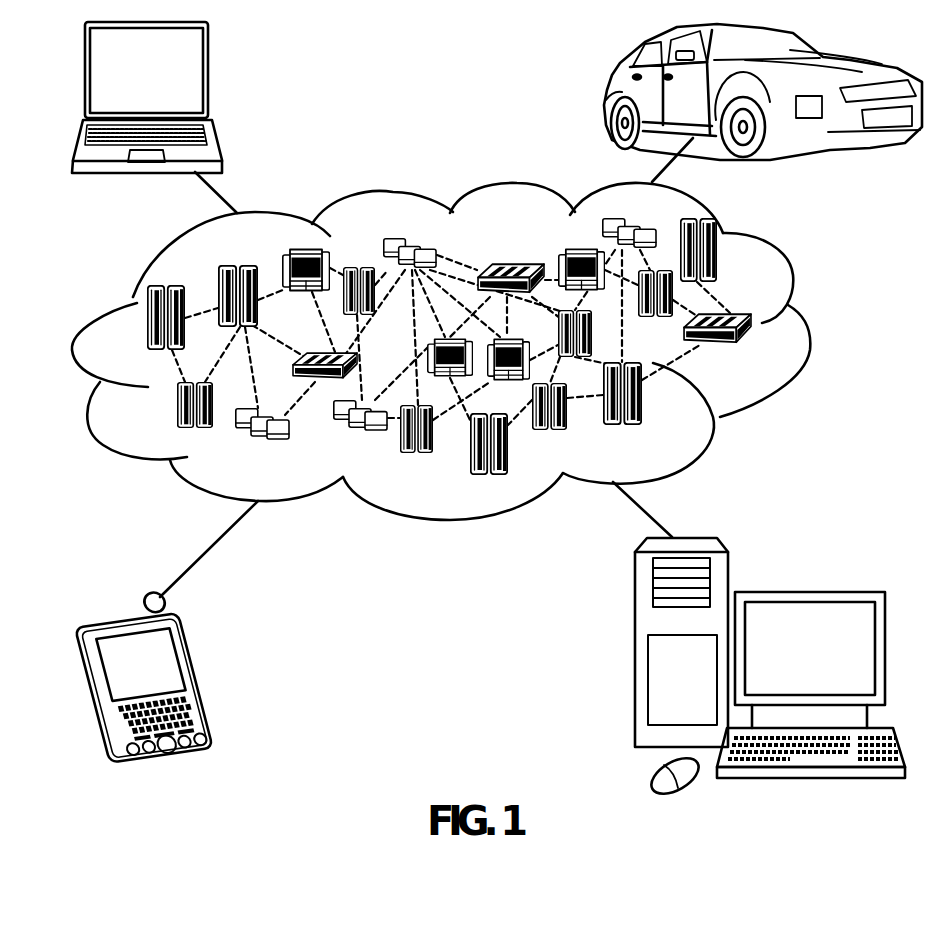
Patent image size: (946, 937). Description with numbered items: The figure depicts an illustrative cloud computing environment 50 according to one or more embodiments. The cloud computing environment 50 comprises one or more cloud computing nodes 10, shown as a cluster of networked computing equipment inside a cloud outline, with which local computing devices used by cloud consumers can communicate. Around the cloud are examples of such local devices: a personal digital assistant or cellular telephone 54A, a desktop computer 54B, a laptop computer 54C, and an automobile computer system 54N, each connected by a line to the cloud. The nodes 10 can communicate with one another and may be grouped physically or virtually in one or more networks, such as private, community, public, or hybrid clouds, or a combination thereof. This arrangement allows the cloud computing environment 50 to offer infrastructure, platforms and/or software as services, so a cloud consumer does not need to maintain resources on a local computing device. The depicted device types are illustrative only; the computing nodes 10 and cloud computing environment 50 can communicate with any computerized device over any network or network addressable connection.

The cloud computing nodes 10 is at (495, 411).
The cloud computing environment 50 is at (808, 327).
The personal digital assistant or cellular telephone 54A is at (202, 673).
The desktop computer 54B is at (805, 590).
The laptop computer 54C is at (210, 78).
The automobile computer system 54N is at (610, 90).